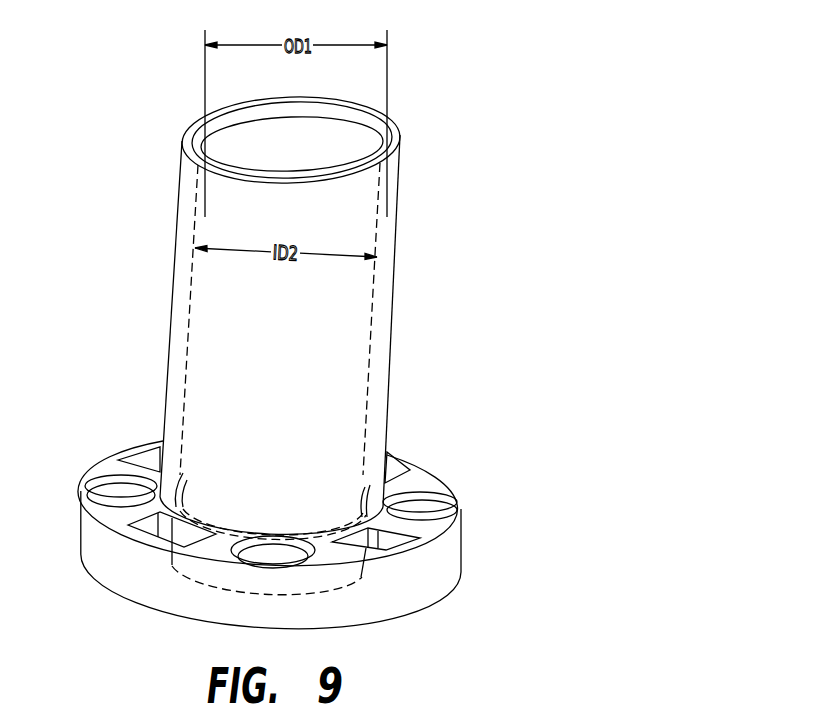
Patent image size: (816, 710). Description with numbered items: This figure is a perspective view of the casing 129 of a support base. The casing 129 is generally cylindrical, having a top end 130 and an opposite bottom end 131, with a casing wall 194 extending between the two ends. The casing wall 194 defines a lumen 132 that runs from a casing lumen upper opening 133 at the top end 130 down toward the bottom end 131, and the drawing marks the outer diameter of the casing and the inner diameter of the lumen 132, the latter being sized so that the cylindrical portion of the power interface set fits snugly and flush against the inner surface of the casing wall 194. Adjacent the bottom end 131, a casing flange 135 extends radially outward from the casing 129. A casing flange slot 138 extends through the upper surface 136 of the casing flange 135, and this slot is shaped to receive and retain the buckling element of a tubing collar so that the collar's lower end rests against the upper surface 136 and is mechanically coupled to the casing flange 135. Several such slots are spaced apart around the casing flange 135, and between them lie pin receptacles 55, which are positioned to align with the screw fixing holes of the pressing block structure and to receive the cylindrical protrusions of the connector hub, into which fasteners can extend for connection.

The casing 129 is at (157, 275).
The top end 130 is at (402, 153).
The bottom end 131 is at (372, 490).
The lumen 132 is at (298, 142).
The casing lumen upper opening 133 is at (232, 142).
The casing flange 135 is at (422, 575).
The upper surface 136 is at (430, 530).
The casing flange slot 138 is at (375, 540).
The casing wall 194 is at (393, 308).
The pin receptacle 55 is at (271, 557).